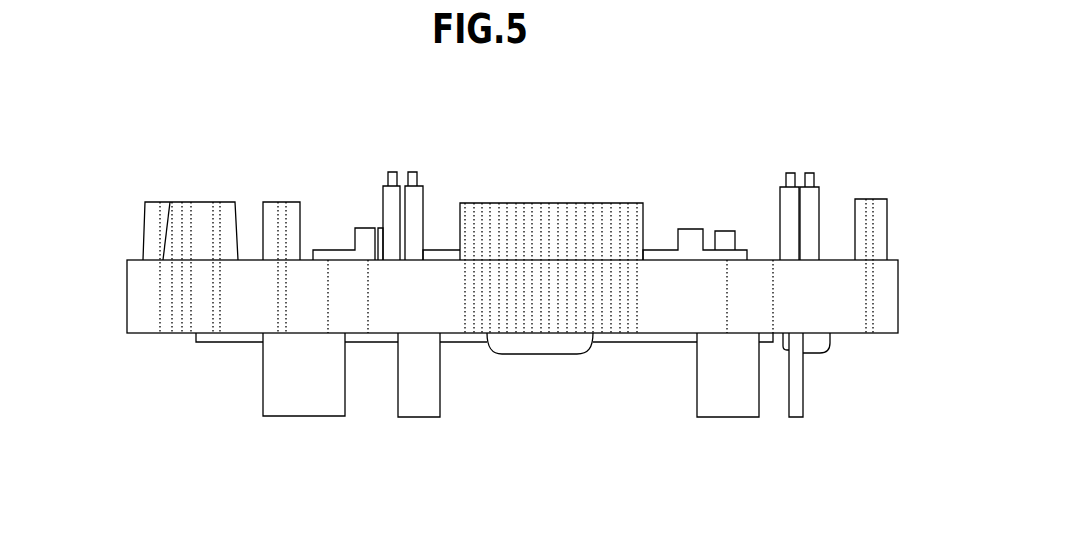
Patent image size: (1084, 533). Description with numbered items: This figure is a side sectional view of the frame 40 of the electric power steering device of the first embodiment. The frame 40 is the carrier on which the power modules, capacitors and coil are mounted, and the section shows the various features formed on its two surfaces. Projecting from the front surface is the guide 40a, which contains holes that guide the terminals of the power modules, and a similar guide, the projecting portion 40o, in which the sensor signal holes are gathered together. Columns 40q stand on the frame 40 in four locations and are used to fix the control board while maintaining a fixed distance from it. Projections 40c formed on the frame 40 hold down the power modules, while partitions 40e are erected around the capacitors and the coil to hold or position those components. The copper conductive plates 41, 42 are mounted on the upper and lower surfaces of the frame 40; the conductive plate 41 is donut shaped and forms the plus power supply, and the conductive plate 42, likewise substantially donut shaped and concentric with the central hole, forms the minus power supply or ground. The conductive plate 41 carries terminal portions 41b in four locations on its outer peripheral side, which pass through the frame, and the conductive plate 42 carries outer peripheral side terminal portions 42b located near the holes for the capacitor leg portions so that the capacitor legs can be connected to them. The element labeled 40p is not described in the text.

The frame 40 is at (837, 260).
The projecting portion 40o is at (197, 202).
The electronic component 40p is at (272, 202).
The guide 40a is at (522, 203).
The columns 40q is at (797, 187).
The projections 40c is at (542, 355).
The partitions 40e is at (803, 402).
The conductive plate 41 is at (196, 342).
The terminal portions 41b is at (722, 230).
The conductive plate 42 is at (748, 252).
The outer peripheral side terminal portions 42b is at (365, 228).